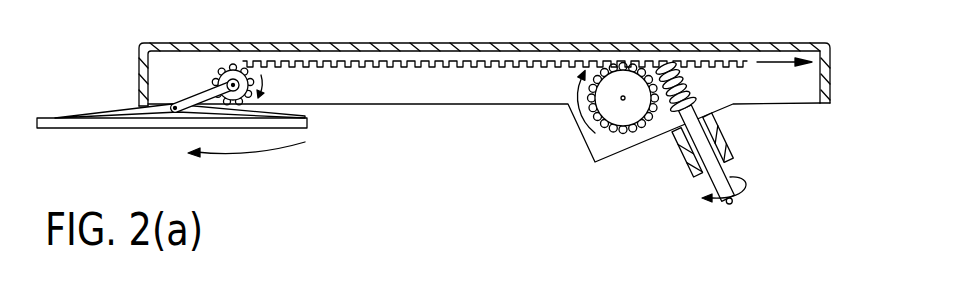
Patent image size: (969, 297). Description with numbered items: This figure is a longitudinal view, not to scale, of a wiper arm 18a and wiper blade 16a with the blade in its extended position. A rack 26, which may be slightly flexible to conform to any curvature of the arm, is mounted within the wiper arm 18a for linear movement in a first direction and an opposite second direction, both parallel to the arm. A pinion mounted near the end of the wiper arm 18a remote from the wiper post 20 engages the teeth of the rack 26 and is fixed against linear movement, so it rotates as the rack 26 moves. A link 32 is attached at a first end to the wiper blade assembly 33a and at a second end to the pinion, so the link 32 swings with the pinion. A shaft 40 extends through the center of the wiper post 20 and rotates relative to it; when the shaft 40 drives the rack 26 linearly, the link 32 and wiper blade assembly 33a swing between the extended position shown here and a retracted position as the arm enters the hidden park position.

The wiper blade 16a is at (87, 125).
The wiper arm 18a is at (185, 50).
The wiper post 20 is at (690, 166).
The rack 26 is at (344, 62).
The link 32 is at (214, 62).
The wiper blade assembly 33a is at (85, 115).
The shaft 40 is at (725, 180).